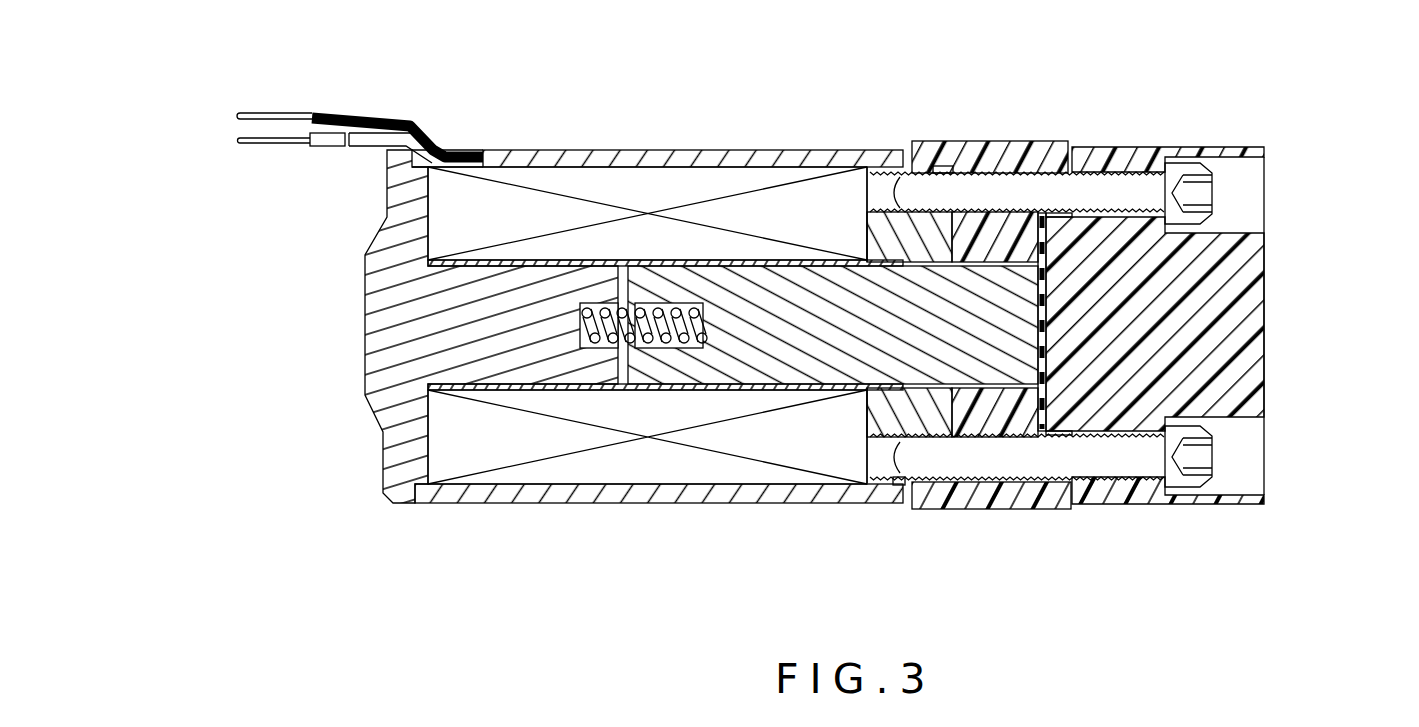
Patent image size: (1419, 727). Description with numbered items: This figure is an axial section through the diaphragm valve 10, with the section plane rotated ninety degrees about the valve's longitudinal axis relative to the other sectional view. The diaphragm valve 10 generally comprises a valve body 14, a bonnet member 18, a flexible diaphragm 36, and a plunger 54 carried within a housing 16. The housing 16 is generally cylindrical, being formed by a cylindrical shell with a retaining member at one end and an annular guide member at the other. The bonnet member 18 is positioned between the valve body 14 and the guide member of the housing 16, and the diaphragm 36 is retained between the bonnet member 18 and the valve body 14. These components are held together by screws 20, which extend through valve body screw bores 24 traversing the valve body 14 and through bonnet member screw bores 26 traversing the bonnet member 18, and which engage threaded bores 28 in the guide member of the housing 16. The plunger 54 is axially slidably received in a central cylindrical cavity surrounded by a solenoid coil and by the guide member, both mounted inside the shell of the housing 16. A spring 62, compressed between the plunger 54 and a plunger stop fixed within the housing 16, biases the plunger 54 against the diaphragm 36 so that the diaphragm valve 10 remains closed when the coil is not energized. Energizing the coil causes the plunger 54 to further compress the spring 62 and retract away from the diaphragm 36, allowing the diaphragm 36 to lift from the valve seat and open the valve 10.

The diaphragm valve 10 is at (639, 99).
The valve body 14 is at (1230, 291).
The housing 16 is at (782, 490).
The bonnet member 18 is at (1013, 488).
The screws 20 is at (1120, 193).
The valve body screw bores 24 is at (1122, 167).
The bonnet member screw bores 26 is at (1037, 141).
The threaded bores 28 is at (897, 490).
The flexible diaphragm 36 is at (1040, 297).
The plunger 54 is at (784, 287).
The spring 62 is at (598, 313).